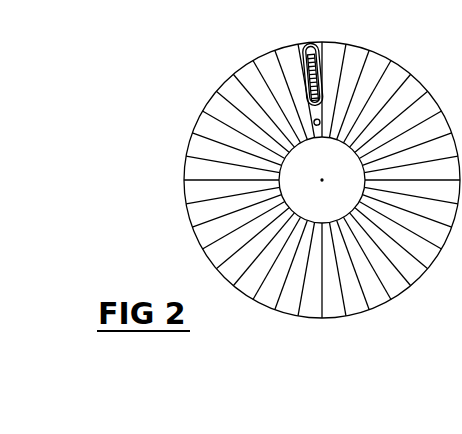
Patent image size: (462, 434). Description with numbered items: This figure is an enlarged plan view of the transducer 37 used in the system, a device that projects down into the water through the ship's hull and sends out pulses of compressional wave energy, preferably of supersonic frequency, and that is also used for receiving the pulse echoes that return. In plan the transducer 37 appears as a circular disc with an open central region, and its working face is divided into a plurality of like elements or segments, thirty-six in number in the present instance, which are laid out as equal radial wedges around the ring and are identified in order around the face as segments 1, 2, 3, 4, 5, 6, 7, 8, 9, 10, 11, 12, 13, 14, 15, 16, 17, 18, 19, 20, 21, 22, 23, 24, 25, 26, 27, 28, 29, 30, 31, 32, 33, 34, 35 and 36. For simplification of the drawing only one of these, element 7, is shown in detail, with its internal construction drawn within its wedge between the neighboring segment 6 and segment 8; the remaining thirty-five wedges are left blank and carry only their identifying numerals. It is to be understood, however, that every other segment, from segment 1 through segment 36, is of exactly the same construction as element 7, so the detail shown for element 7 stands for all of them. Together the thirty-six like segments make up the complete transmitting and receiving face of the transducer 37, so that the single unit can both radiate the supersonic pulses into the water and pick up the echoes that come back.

The element 7 is at (313, 42).
The transducer 37 is at (418, 70).
The segment 1 is at (236, 140).
The segment 2 is at (243, 127).
The segment 3 is at (252, 116).
The segment 4 is at (263, 106).
The segment 5 is at (277, 99).
The segment 6 is at (291, 93).
The segment 8 is at (329, 89).
The segment 9 is at (343, 91).
The segment 10 is at (360, 94).
The segment 11 is at (373, 101).
The segment 12 is at (384, 110).
The segment 13 is at (394, 121).
The segment 14 is at (401, 135).
The segment 15 is at (406, 149).
The segment 16 is at (411, 168).
The segment 17 is at (412, 191).
The segment 18 is at (411, 205).
The segment 19 is at (406, 220).
The segment 20 is at (400, 233).
The segment 21 is at (391, 244).
The segment 22 is at (380, 253).
The segment 23 is at (368, 261).
The segment 24 is at (353, 266).
The segment 25 is at (335, 269).
The segment 26 is at (312, 270).
The segment 27 is at (297, 269).
The segment 28 is at (284, 264).
The segment 29 is at (271, 258).
The segment 30 is at (259, 249).
The segment 31 is at (250, 238).
The segment 32 is at (242, 226).
The segment 33 is at (236, 211).
The segment 34 is at (233, 192).
The segment 35 is at (231, 169).
The segment 36 is at (233, 154).